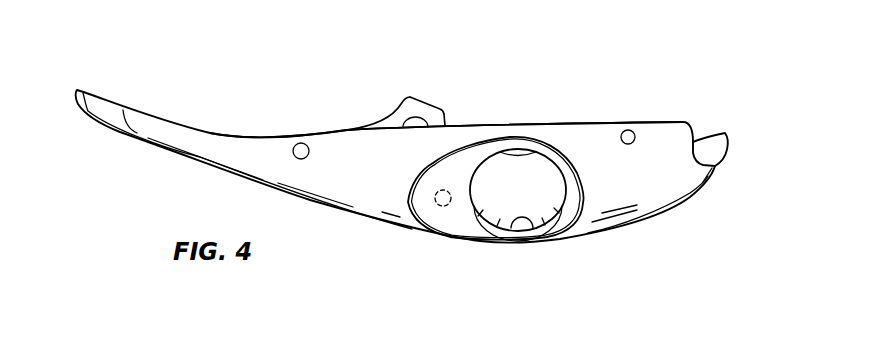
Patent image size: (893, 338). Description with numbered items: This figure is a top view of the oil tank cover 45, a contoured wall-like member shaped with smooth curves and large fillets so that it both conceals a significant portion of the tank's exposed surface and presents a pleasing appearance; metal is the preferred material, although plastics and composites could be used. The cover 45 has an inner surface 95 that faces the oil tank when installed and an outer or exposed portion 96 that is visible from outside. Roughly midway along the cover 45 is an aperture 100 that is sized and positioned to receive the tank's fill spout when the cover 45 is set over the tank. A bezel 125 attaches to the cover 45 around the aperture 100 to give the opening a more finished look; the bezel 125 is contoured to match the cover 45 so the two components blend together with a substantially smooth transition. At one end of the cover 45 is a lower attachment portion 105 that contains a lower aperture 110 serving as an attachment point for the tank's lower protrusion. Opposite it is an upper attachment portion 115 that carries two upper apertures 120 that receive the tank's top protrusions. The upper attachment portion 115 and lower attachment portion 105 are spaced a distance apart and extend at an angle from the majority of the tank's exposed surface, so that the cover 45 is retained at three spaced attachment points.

The cover 45 is at (680, 175).
The inner surface 95 is at (440, 112).
The outer or exposed portion 96 is at (682, 135).
The aperture 100 is at (533, 220).
The lower attachment portion 105 is at (420, 106).
The lower aperture 110 is at (405, 121).
The upper attachment portion 115 is at (547, 127).
The upper apertures 120 is at (300, 142).
The bezel 125 is at (458, 226).